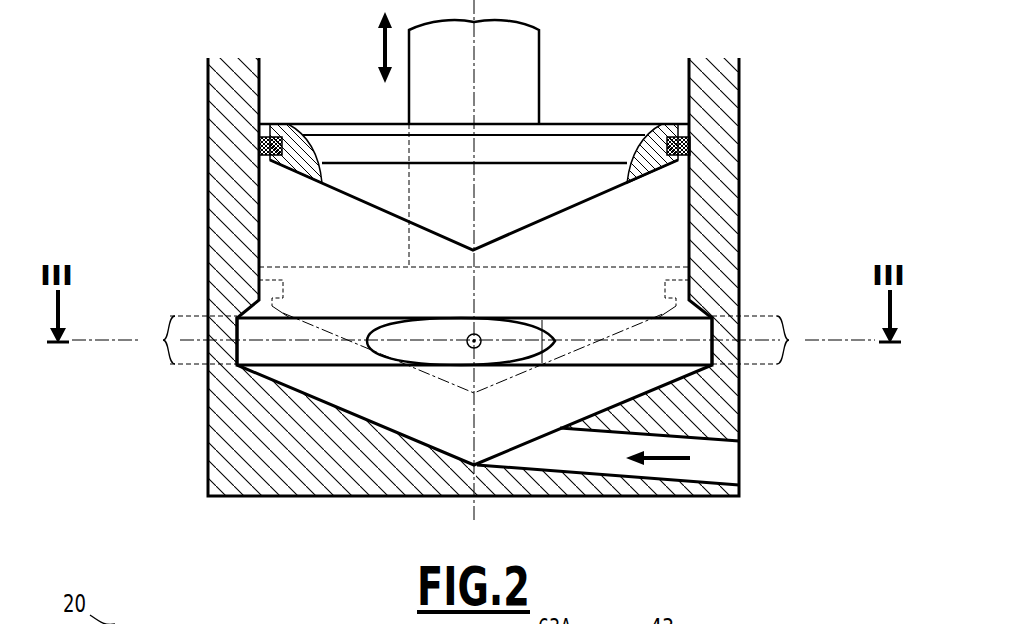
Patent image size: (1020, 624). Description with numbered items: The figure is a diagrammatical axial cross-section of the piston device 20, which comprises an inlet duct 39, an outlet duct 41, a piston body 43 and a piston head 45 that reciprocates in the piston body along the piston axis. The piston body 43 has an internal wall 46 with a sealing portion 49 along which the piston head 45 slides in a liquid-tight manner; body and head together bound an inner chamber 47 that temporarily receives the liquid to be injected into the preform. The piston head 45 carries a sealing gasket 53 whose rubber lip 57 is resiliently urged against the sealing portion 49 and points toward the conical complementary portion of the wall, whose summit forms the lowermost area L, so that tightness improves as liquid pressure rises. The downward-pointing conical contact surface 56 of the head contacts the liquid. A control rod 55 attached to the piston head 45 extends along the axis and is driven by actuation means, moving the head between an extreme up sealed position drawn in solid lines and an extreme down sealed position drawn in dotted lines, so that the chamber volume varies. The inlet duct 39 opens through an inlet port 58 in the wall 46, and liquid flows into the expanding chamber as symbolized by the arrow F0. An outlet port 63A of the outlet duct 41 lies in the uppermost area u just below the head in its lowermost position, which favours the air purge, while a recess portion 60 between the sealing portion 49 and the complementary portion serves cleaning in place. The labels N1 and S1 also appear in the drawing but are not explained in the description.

The piston device 20 is at (166, 74).
The inlet duct 39 is at (727, 462).
The outlet duct 41 is at (245, 364).
The piston body 43 is at (738, 88).
The piston head 45 is at (690, 132).
The internal wall 46 is at (268, 268).
The inner chamber 47 is at (633, 357).
The sealing portion 49 is at (697, 242).
The sealing gasket 53 is at (690, 150).
The control rod 55 is at (540, 71).
The contact surface 56 is at (332, 195).
The lip 57 is at (676, 165).
The inlet port 58 is at (537, 443).
The recess portion 60 is at (236, 325).
The outlet port 63A is at (412, 358).
The liquid flow arrow F0 is at (668, 460).
The lowermost area L is at (472, 463).
The nozzle axis point N1 is at (481, 333).
The orifice section S1 is at (428, 356).
The uppermost area u is at (475, 340).